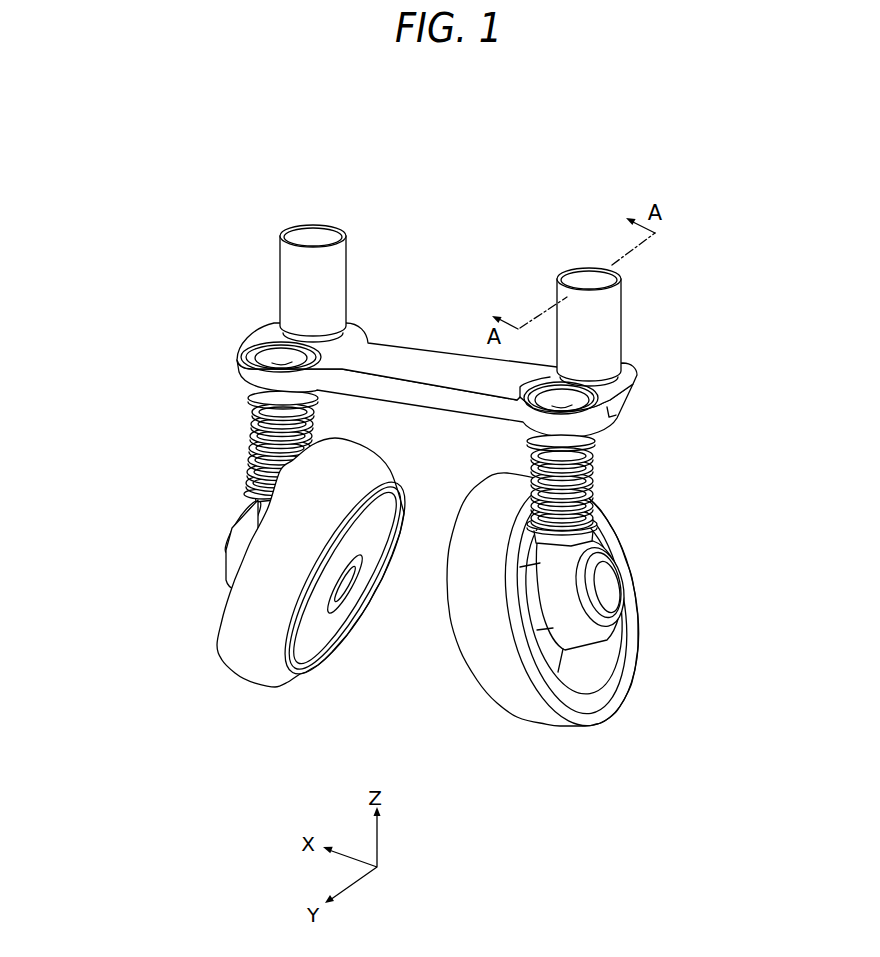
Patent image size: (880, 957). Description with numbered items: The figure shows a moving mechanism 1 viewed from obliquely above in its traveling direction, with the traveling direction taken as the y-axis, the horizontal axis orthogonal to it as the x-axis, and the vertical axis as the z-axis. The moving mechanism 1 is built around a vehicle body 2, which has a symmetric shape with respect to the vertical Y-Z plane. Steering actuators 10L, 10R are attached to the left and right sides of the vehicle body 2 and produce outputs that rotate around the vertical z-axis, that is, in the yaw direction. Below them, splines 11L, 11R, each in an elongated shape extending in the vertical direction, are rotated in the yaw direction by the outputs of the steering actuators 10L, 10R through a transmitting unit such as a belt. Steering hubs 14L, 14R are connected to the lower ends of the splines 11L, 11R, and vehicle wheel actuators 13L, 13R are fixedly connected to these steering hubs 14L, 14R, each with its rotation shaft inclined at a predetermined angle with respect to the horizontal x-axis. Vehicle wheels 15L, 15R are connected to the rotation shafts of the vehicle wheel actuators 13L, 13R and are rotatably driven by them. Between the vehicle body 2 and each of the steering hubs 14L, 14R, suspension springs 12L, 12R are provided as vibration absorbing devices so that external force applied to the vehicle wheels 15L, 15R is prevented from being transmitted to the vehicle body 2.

The moving mechanism 1 is at (430, 475).
The vehicle body 2 is at (428, 350).
The steering actuator 10R is at (281, 277).
The steering actuator 10L is at (587, 268).
The spline 11R is at (277, 362).
The spline 11L is at (562, 400).
The suspension spring 12R is at (250, 437).
The suspension spring 12L is at (587, 481).
The vehicle wheel actuator 13R is at (237, 523).
The vehicle wheel actuator 13L is at (597, 575).
The steering hub 14R is at (227, 566).
The steering hub 14L is at (603, 630).
The vehicle wheel 15R is at (303, 685).
The vehicle wheel 15L is at (593, 708).